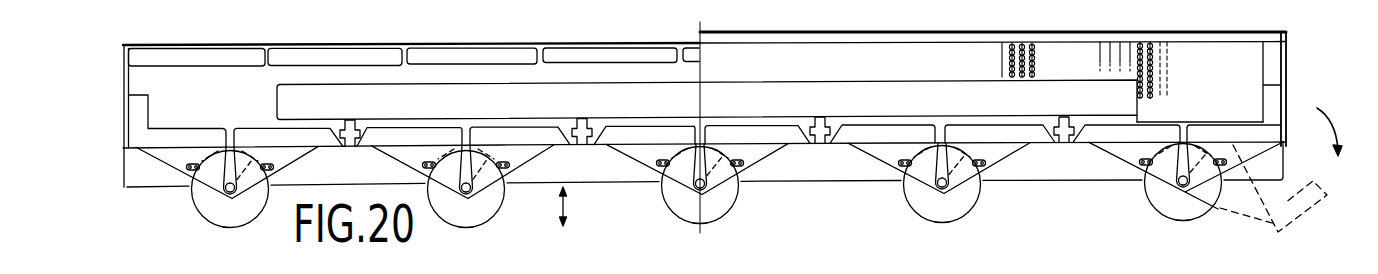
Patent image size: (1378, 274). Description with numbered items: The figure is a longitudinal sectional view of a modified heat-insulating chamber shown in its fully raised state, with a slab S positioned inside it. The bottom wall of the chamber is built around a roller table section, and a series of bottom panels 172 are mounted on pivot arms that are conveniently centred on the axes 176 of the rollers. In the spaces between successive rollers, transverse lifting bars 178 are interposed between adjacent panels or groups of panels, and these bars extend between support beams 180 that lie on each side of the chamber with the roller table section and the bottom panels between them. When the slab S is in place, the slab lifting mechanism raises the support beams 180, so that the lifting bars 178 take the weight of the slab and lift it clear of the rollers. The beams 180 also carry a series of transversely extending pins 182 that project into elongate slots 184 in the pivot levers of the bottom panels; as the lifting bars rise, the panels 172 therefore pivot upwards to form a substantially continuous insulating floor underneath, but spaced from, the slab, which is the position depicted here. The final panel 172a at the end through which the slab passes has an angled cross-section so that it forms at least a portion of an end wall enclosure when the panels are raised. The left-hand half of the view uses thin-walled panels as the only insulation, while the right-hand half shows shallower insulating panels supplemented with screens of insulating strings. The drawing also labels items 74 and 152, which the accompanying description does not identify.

The slab S is at (288, 100).
The wheel truck assembly 74 is at (709, 162).
The frame member 152 is at (402, 183).
The bottom panels 172 is at (629, 126).
The final panel 172a is at (1270, 102).
The axes of the rollers 176 is at (976, 203).
The transverse lifting bars 178 is at (351, 124).
The support beams 180 is at (825, 170).
The transversely extending pins 182 is at (505, 173).
The elongate slots 184 is at (503, 162).